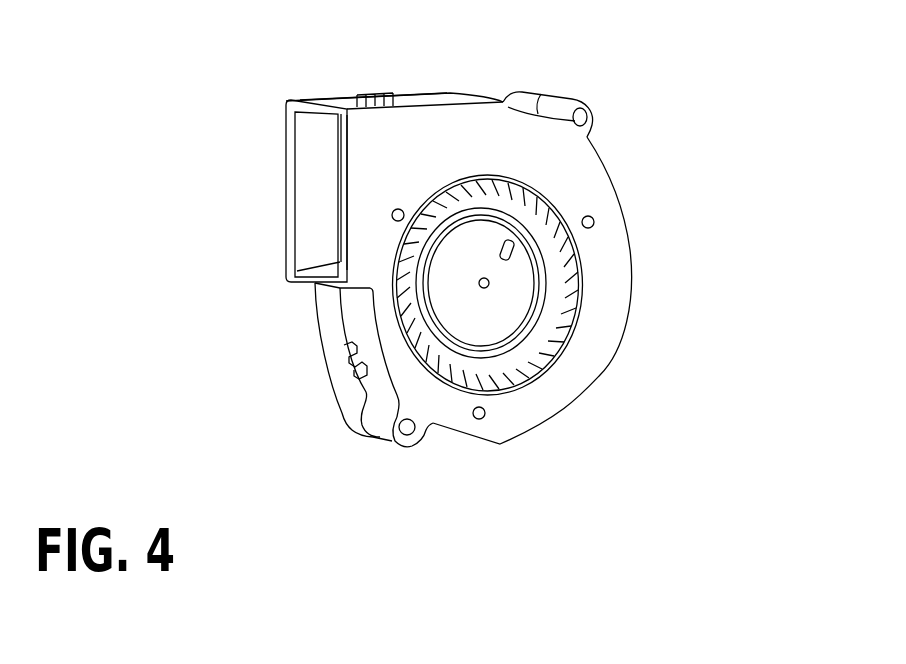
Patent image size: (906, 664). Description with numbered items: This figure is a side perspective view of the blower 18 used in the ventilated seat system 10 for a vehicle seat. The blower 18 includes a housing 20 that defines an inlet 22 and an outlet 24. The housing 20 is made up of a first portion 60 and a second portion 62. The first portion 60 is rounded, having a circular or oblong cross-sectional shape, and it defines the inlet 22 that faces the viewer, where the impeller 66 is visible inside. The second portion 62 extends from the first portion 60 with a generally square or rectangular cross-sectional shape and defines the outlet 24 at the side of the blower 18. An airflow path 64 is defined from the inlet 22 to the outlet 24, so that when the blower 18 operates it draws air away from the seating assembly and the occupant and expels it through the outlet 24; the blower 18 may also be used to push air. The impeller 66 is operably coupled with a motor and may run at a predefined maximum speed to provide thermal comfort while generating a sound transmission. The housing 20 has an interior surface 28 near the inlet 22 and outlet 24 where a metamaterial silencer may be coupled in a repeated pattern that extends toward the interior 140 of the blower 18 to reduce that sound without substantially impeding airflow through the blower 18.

The ventilated seat system 10 is at (722, 72).
The blower 18 is at (612, 117).
The housing 20 is at (455, 95).
The inlet 22 is at (460, 363).
The outlet 24 is at (330, 245).
The interior surface 28 is at (560, 275).
The first portion 60 is at (605, 303).
The second portion 62 is at (352, 125).
The airflow path 64 is at (318, 157).
The impeller 66 is at (577, 233).
The interior 140 is at (330, 197).